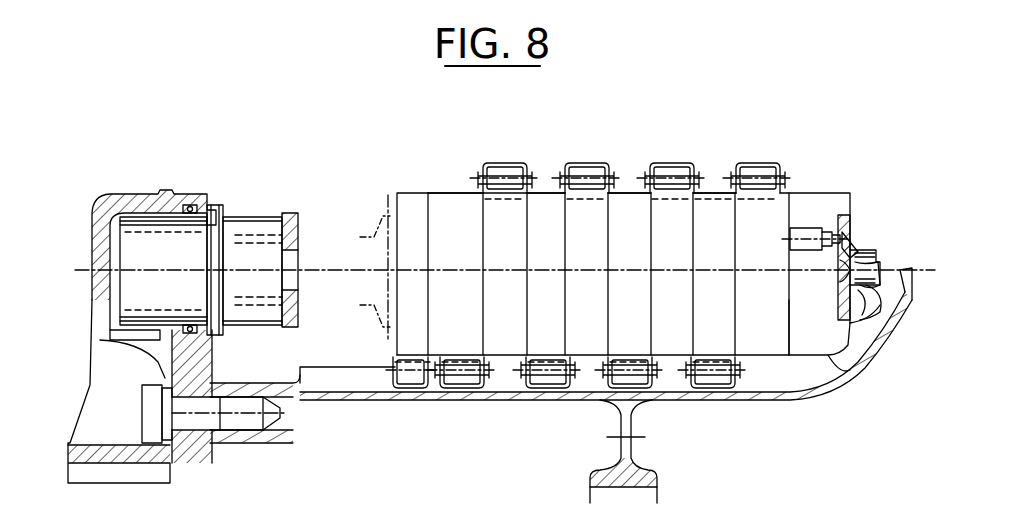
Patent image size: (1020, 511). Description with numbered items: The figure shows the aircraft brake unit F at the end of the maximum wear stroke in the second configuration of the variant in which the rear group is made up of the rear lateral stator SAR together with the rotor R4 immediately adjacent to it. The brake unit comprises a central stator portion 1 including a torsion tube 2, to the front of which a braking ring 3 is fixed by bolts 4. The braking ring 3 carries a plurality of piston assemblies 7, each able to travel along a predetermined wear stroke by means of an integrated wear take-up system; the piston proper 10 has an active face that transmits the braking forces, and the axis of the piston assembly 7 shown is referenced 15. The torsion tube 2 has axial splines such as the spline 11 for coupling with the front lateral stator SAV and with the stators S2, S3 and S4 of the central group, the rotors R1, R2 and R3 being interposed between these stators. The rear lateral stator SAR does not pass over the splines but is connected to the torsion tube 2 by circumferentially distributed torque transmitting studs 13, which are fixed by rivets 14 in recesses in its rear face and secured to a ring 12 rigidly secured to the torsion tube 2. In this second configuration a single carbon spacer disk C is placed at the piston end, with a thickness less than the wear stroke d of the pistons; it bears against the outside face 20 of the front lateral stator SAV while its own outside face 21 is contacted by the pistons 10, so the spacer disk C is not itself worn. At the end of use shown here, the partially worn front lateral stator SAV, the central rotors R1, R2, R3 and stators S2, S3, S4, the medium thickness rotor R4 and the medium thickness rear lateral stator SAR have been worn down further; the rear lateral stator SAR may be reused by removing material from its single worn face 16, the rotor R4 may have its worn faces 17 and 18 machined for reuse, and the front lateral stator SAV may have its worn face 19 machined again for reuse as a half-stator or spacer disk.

The central stator portion 1 is at (655, 468).
The torsion tube 2 is at (490, 397).
The braking ring 3 is at (140, 198).
The bolts 4 is at (150, 396).
The piston assembly 7 is at (250, 213).
The piston 10 is at (289, 214).
The spline 11 is at (358, 380).
The ring 12 is at (868, 262).
The torque transmitting studs 13 is at (855, 240).
The rivets 14 is at (850, 225).
The axis of the piston assembly 15 is at (85, 282).
The worn face of the rear lateral stator 16 is at (785, 305).
The worn face of rotor R4 17 is at (805, 200).
The worn face of rotor R4 18 is at (722, 205).
The worn face of the front lateral stator 19 is at (485, 292).
The outside face of the front lateral stator 20 is at (428, 283).
The outside face of the spacer disk 21 is at (396, 190).
The spacer disk C is at (412, 196).
The front lateral stator SAV is at (447, 210).
The rear lateral stator SAR is at (845, 210).
The rotor R1 is at (503, 182).
The rotor R2 is at (590, 182).
The rotor R3 is at (672, 190).
The rotor R4 is at (768, 190).
The stator S2 is at (538, 205).
The stator S3 is at (620, 205).
The stator S4 is at (715, 200).
The aircraft brake unit F is at (213, 170).
The wear stroke d is at (388, 356).